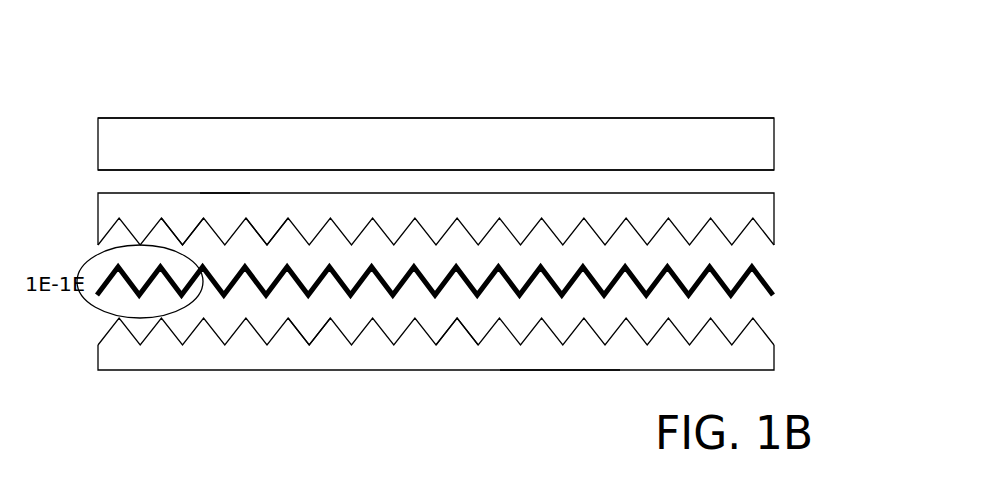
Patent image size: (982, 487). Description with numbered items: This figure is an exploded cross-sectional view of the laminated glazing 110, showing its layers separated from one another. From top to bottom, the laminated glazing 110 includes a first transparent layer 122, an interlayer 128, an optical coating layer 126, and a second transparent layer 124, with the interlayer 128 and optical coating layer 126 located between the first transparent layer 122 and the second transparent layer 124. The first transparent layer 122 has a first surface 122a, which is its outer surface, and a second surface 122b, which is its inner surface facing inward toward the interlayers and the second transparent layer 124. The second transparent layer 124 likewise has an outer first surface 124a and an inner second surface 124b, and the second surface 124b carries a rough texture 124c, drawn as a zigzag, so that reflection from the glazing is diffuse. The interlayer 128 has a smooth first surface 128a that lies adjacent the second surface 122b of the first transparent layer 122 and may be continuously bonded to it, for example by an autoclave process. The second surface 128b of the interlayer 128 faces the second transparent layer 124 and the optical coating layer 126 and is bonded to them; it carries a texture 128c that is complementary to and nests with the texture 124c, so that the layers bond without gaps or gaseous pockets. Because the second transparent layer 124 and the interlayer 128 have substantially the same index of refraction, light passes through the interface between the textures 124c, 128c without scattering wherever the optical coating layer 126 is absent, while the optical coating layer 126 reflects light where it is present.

The laminated glazing 110 is at (766, 76).
The first transparent layer 122 is at (774, 138).
The first surface 122a is at (560, 118).
The second surface 122b is at (510, 170).
The second transparent layer 124 is at (774, 345).
The first surface 124a is at (563, 370).
The second surface 124b is at (453, 332).
The texture 124c is at (301, 306).
The optical coating layer 126 is at (760, 276).
The interlayer 128 is at (774, 215).
The first surface 128a is at (223, 193).
The second surface 128b is at (177, 229).
The texture 128c is at (269, 262).